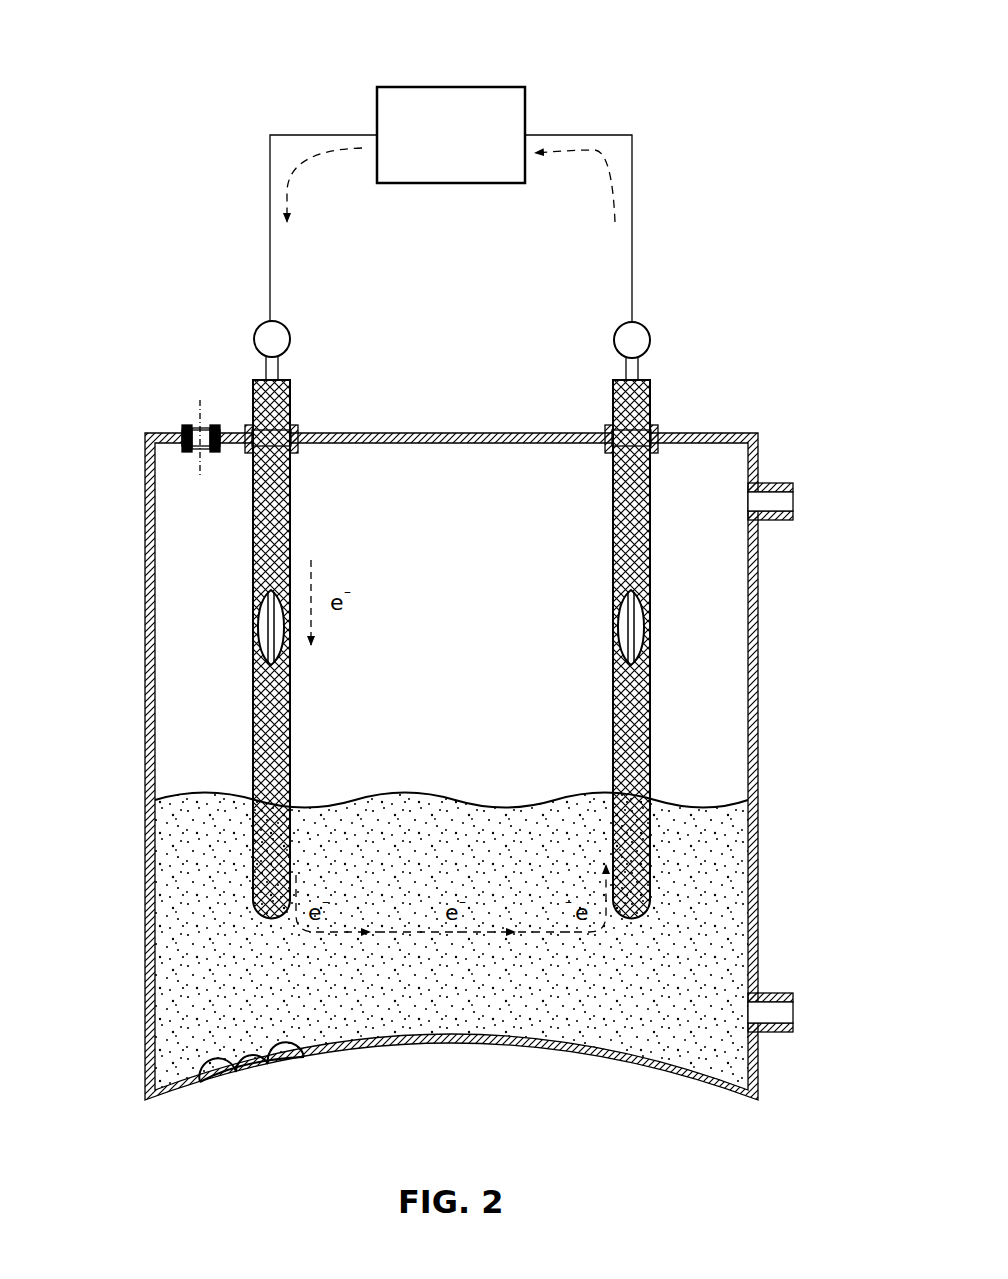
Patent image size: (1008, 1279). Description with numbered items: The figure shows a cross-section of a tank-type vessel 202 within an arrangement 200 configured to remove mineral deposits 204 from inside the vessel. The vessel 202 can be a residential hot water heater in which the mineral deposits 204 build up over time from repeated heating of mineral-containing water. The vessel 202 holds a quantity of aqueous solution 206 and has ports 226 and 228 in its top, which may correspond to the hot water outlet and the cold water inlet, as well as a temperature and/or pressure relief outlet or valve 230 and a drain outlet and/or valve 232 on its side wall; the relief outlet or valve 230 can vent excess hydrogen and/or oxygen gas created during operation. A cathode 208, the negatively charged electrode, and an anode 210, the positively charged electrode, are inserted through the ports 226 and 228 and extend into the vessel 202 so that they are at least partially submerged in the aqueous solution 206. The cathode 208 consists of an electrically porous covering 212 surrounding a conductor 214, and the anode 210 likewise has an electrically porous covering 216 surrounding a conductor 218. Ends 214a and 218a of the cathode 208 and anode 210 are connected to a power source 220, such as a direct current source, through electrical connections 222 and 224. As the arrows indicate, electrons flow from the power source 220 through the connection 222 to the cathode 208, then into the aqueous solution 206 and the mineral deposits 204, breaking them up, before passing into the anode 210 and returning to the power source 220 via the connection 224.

The arrangement 200 is at (150, 48).
The tank-type vessel 202 is at (145, 462).
The mineral deposits 204 is at (222, 1080).
The aqueous solution 206 is at (175, 866).
The cathode 208 is at (232, 600).
The anode 210 is at (671, 600).
The electrically porous covering 212 is at (253, 568).
The conductor 214 is at (258, 650).
The end 214a is at (285, 325).
The electrically porous covering 216 is at (650, 568).
The conductor 218 is at (645, 650).
The end 218a is at (619, 325).
The power source 220 is at (402, 87).
The electrical connection 222 is at (270, 170).
The electrical connection 224 is at (632, 170).
The port 226 is at (298, 410).
The port 228 is at (605, 410).
The temperature and/or pressure relief outlet or valve 230 is at (800, 500).
The drain outlet and/or valve 232 is at (800, 1012).